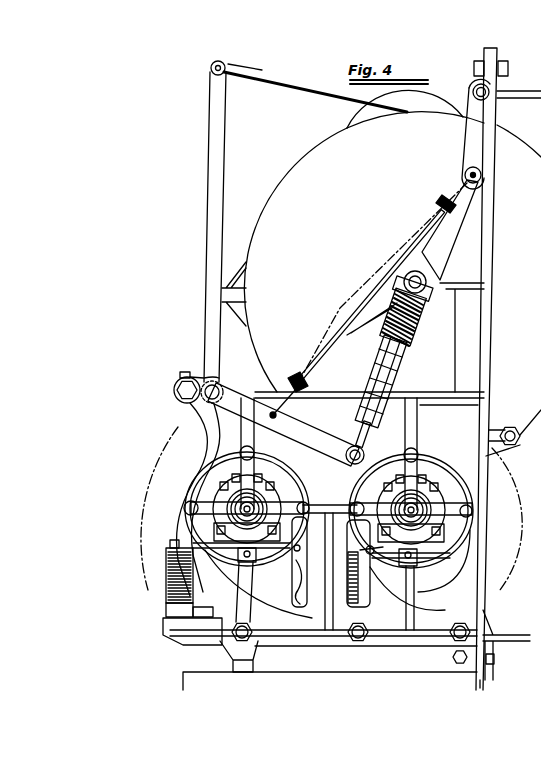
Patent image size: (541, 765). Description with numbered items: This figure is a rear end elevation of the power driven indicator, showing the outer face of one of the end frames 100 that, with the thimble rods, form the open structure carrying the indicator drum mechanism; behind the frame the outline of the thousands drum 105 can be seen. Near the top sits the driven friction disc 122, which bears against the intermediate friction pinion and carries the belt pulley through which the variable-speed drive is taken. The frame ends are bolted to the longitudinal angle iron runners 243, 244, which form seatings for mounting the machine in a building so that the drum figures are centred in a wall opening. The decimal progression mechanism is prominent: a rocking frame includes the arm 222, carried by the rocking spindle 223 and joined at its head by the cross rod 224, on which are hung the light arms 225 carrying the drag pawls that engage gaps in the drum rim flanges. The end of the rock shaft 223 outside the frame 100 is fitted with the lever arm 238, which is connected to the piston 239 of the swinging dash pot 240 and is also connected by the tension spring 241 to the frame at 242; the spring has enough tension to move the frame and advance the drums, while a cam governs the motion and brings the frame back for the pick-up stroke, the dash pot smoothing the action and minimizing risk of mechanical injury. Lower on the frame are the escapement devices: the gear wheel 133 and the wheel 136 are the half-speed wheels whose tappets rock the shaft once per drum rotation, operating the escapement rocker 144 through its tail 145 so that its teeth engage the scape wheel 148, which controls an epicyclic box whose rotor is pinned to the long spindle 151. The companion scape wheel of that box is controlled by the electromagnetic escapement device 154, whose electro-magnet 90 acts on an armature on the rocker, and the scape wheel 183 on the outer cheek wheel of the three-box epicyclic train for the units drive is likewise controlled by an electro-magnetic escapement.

The electro-magnet 90 is at (166, 576).
The end frame 100 is at (477, 266).
The thousands drum 105 is at (392, 252).
The driven friction disc 122 is at (437, 93).
The gear wheel 133 is at (512, 472).
The wheel 136 is at (173, 434).
The escapement rocker 144 is at (249, 560).
The tail 145 is at (300, 578).
The scape wheel 148 is at (285, 480).
The long spindle 151 is at (240, 506).
The electromagnetic escapement device 154 is at (212, 606).
The scape wheel 183 is at (430, 482).
The arm 222 is at (224, 172).
The rocking spindle 223 is at (203, 385).
The cross rod 224 is at (228, 70).
The light arm 225 is at (306, 90).
The lever arm 238 is at (313, 433).
The piston 239 is at (420, 318).
The swinging dash pot 240 is at (398, 362).
The tension spring 241 is at (350, 305).
The frame attachment point 242 is at (483, 175).
The angle iron runner 243 is at (517, 91).
The angle iron runner 244 is at (512, 634).